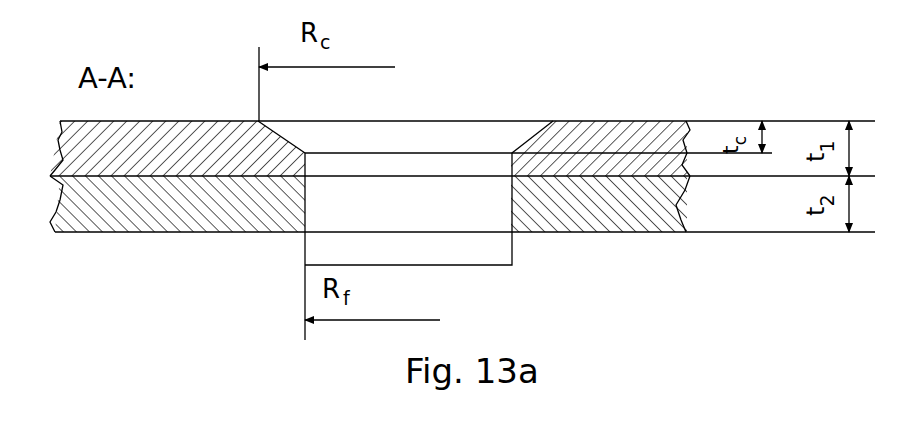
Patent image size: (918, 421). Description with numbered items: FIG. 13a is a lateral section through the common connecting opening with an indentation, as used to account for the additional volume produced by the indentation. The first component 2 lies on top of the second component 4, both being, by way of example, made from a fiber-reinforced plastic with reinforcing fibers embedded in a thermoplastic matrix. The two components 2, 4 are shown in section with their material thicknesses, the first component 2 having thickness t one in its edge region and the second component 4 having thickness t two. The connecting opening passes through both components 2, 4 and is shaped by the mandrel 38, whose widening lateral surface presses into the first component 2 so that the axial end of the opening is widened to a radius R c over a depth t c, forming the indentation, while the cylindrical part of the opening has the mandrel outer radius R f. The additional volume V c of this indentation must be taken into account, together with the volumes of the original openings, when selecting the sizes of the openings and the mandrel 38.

The first component 2 is at (619, 130).
The second component 4 is at (627, 218).
The mandrel 38 is at (327, 218).